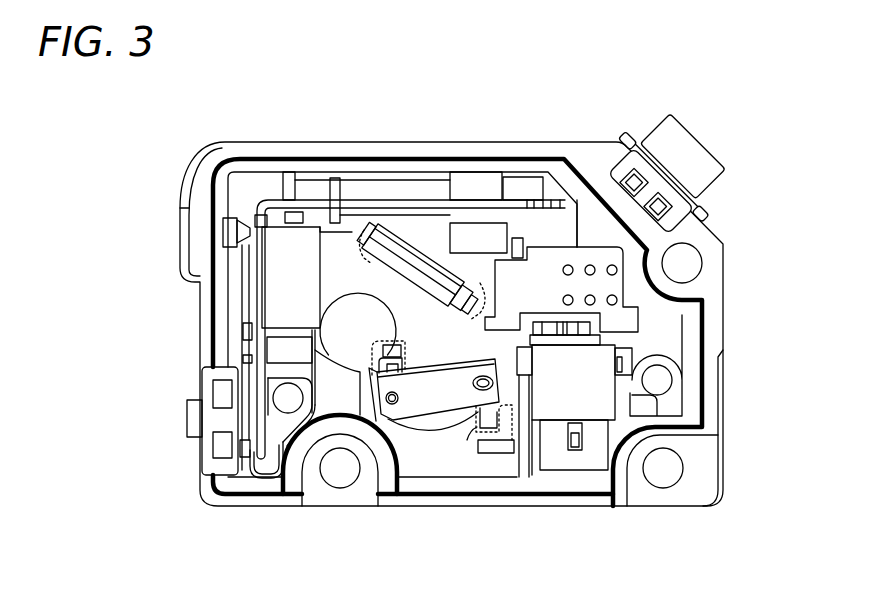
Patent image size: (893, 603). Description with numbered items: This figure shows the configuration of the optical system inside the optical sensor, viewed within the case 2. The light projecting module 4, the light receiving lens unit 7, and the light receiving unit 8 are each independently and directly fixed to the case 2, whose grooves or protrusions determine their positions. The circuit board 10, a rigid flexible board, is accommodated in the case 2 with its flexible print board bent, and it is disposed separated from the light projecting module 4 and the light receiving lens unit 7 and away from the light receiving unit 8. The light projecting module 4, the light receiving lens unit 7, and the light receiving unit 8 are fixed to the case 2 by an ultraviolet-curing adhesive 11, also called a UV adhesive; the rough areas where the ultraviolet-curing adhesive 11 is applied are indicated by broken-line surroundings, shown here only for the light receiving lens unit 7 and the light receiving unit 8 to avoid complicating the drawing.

The case 2 is at (711, 404).
The light projecting module 4 is at (585, 382).
The light receiving lens unit 7 is at (442, 392).
The light receiving unit 8 is at (420, 270).
The circuit board 10 is at (475, 207).
The ultraviolet-curing adhesive 11 is at (362, 253).